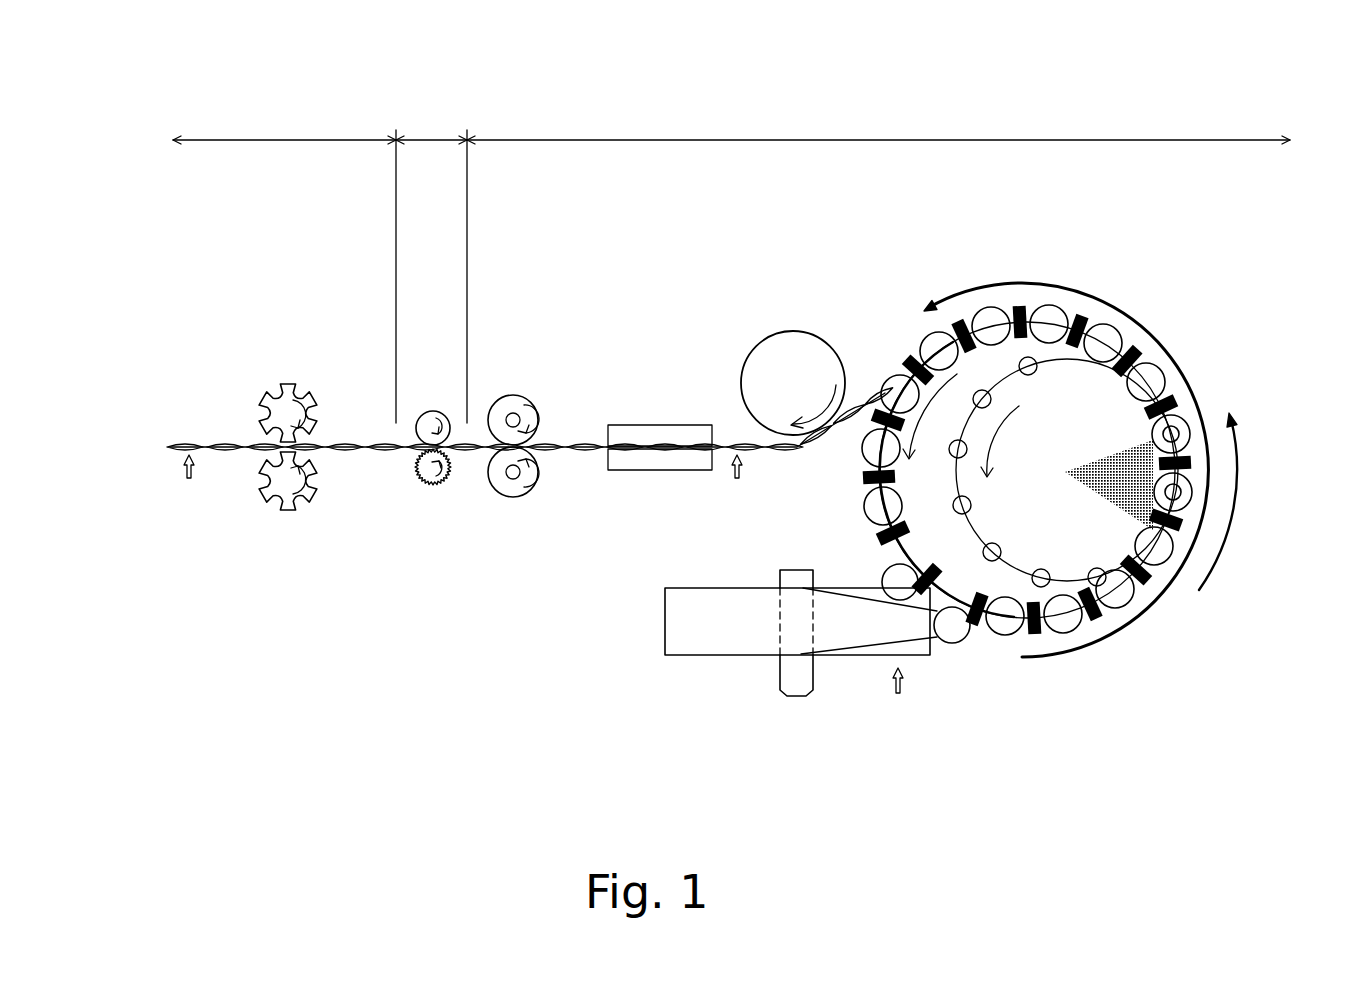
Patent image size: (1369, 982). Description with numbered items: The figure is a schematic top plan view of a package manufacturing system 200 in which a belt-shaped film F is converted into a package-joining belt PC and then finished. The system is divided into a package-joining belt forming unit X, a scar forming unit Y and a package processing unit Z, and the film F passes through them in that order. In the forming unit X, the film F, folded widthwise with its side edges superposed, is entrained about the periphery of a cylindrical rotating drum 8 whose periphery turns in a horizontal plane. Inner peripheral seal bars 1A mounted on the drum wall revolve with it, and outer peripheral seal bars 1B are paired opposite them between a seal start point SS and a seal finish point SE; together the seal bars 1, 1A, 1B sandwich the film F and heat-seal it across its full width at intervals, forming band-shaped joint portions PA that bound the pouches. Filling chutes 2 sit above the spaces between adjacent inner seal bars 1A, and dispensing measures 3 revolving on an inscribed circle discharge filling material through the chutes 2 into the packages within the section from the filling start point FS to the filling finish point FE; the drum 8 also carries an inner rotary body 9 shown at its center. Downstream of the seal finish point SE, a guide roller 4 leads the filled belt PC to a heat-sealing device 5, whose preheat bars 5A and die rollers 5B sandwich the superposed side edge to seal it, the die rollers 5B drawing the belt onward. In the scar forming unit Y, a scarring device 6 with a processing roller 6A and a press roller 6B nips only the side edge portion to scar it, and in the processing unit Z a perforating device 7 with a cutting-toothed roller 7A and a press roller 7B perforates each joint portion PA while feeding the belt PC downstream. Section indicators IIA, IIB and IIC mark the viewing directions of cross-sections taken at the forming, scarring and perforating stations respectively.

The package manufacturing system 200 is at (1230, 100).
The seal bars 1 is at (1012, 797).
The inner peripheral seal bars 1A is at (975, 622).
The outer peripheral seal bars 1B is at (1017, 637).
The filling chutes 2 is at (1086, 648).
The dispensing measures 3 is at (905, 550).
The guide roller 4 is at (762, 336).
The heat-sealing device 5 is at (678, 303).
The preheat bars 5A is at (650, 425).
The die rollers 5B is at (518, 395).
The scarring device 6 is at (516, 590).
The processing roller 6A is at (440, 486).
The press roller 6B is at (450, 433).
The perforating device 7 is at (316, 590).
The cutting-toothed roller 7A is at (288, 506).
The press roller 7B is at (262, 418).
The rotating drum 8 is at (905, 562).
The inner rotary body 9 is at (952, 505).
The film F is at (865, 630).
The filling finish point FE is at (1153, 447).
The filling start point FS is at (1132, 532).
The seal start point SS is at (1032, 637).
The seal finish point SE is at (930, 331).
The joint portions PA is at (856, 408).
The package-joining belt PC is at (866, 382).
The section IIA is at (897, 697).
The section IIB is at (735, 485).
The section IIC is at (187, 485).
The package-joining belt forming unit X is at (878, 127).
The scar forming unit Y is at (431, 266).
The package processing unit Z is at (284, 266).